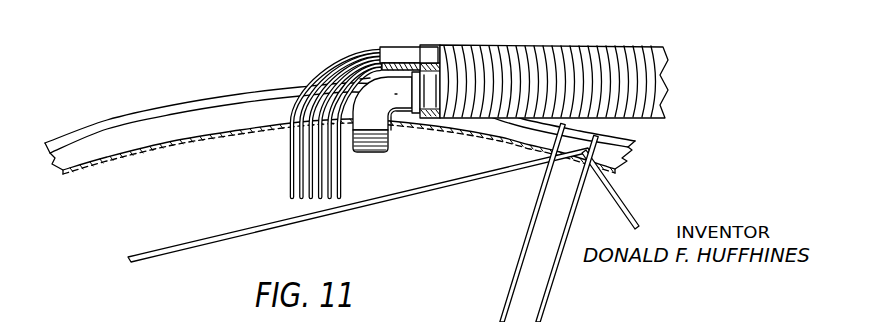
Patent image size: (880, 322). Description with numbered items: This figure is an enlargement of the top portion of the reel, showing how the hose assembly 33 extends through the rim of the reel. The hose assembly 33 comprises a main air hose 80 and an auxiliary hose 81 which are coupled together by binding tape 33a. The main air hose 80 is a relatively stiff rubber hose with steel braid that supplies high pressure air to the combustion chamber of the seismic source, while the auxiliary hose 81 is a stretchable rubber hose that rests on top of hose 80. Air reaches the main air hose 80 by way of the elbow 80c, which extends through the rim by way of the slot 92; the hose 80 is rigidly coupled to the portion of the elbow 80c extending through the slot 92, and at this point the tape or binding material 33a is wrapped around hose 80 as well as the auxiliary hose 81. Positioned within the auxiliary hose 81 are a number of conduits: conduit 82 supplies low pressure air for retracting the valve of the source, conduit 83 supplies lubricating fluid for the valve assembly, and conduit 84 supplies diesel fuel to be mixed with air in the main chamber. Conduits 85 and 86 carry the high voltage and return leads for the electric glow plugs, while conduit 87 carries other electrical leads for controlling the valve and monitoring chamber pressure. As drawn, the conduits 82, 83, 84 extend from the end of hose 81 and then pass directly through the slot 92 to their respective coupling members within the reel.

The hose assembly 33 is at (562, 45).
The binding tape 33a is at (432, 44).
The auxiliary hose 81 is at (394, 50).
The conduit 82 is at (330, 184).
The conduit 83 is at (340, 193).
The conduit 84 is at (320, 189).
The conduit 85 is at (290, 140).
The conduit 86 is at (300, 158).
The conduit 87 is at (310, 171).
The slot 92 is at (392, 121).
The main air hose 80 is at (434, 120).
The elbow 80c is at (350, 142).